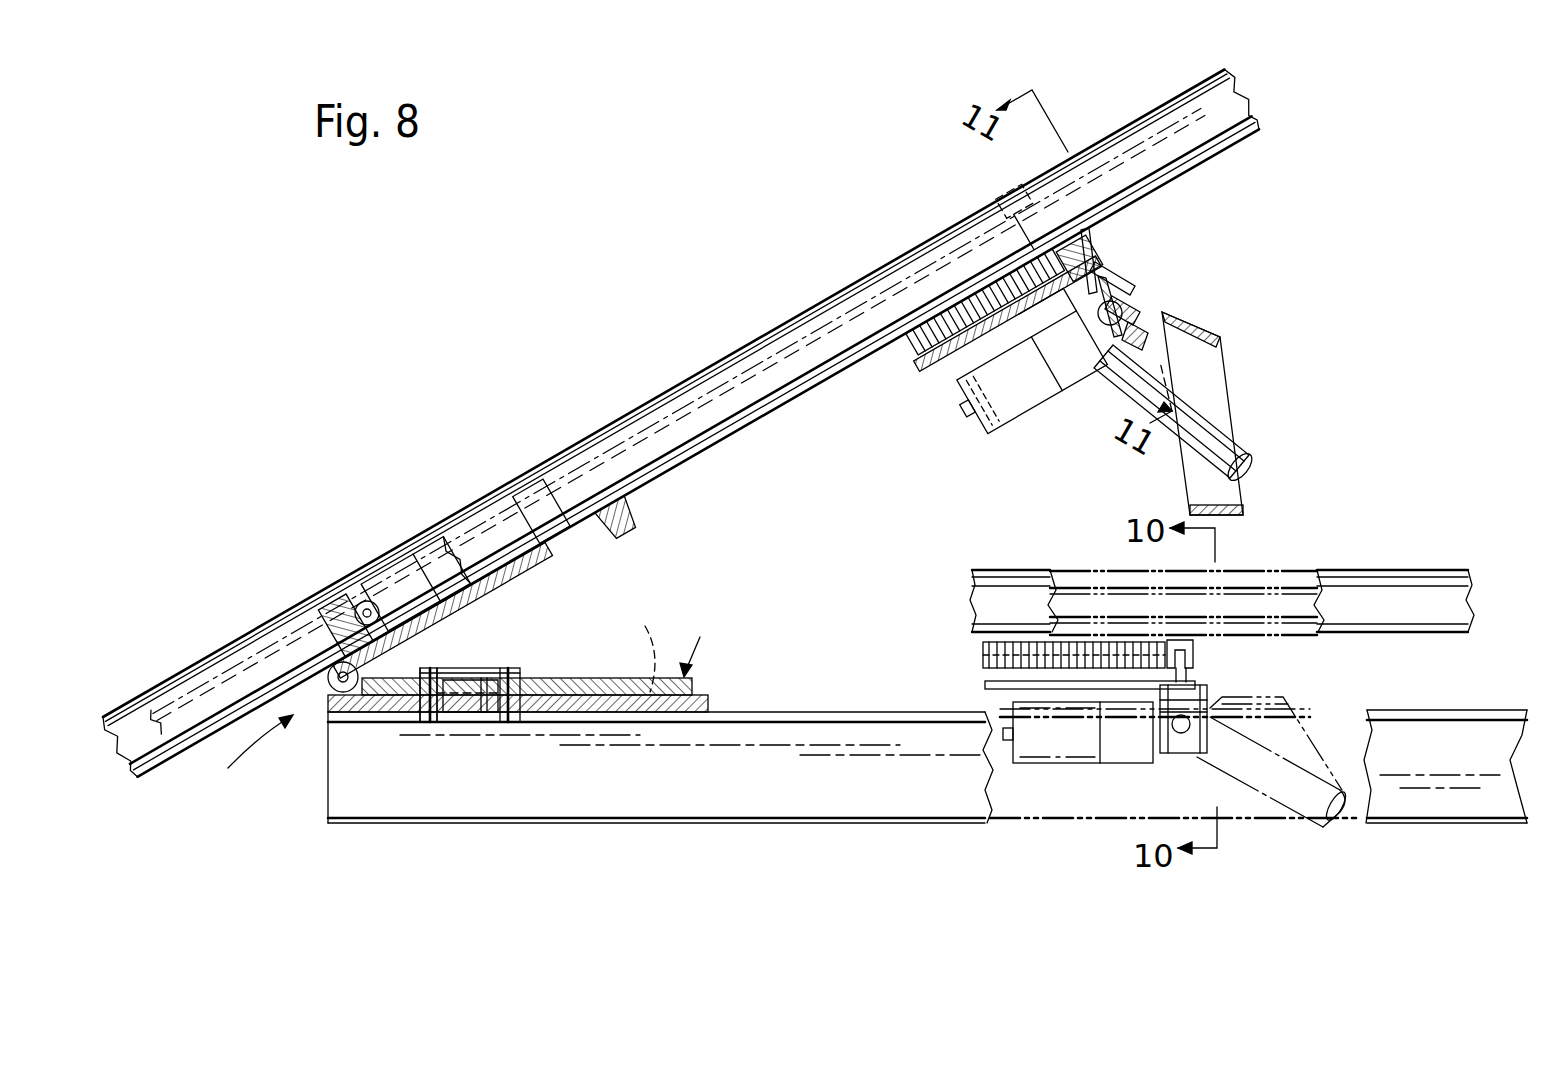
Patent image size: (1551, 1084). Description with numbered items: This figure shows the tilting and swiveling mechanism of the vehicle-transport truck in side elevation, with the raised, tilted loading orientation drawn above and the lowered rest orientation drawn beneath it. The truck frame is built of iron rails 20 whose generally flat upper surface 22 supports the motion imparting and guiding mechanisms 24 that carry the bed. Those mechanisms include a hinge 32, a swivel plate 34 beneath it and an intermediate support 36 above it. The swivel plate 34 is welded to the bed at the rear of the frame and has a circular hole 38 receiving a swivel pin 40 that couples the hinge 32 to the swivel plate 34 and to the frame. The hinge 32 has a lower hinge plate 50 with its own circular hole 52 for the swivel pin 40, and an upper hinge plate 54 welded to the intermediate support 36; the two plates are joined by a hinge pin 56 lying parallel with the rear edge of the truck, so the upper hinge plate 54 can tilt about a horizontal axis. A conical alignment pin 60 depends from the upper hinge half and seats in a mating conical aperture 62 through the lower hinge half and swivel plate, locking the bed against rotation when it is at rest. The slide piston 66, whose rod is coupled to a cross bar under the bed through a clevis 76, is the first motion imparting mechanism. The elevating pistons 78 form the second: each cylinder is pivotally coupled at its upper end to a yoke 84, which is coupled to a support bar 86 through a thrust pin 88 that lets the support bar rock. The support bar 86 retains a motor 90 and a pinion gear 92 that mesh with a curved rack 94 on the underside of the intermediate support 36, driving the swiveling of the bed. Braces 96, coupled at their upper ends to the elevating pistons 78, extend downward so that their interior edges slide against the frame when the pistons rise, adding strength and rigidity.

The iron rails 20 is at (798, 720).
The upper surface 22 is at (778, 748).
The motion imparting and guiding mechanisms 24 is at (240, 754).
The hinge 32 is at (702, 641).
The swivel plate 34 is at (712, 703).
The intermediate support 36 is at (762, 412).
The circular hole 38 is at (494, 727).
The swivel pin 40 is at (490, 724).
The lower hinge plate 50 is at (545, 680).
The circular hole 52 is at (438, 726).
The upper hinge plate 54 is at (528, 568).
The hinge pin 56 is at (332, 688).
The alignment pin 60 is at (622, 520).
The conical aperture 62 is at (630, 649).
The slide piston 66 is at (435, 560).
The clevis 76 is at (343, 600).
The elevating pistons 78 is at (1203, 420).
The yoke 84 is at (1128, 298).
The support bar 86 is at (942, 372).
The thrust pin 88 is at (1128, 272).
The motor 90 is at (1082, 372).
The pinion gear 92 is at (1040, 265).
The curved rack 94 is at (978, 295).
The braces 96 is at (1187, 325).